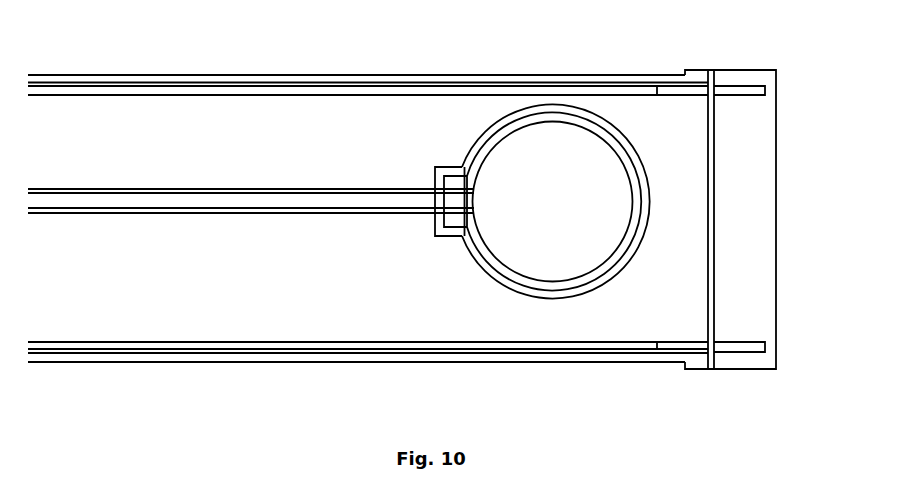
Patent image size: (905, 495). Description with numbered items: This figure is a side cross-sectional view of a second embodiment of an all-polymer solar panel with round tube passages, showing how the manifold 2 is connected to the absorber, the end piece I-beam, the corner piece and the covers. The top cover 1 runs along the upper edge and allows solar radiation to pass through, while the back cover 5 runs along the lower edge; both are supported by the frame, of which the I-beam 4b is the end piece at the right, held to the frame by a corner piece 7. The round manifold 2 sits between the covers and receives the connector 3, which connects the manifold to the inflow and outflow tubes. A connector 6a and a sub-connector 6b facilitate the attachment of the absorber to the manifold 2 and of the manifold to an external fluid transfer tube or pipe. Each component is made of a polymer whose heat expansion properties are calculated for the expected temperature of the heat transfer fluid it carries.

The top cover 1 is at (278, 75).
The manifold 2 is at (577, 106).
The connector 3 is at (201, 213).
The I-beam 4b is at (710, 369).
The back cover 5 is at (368, 377).
The connector 6a is at (533, 115).
The sub-connector 6b is at (457, 167).
The corner piece 7 is at (777, 370).